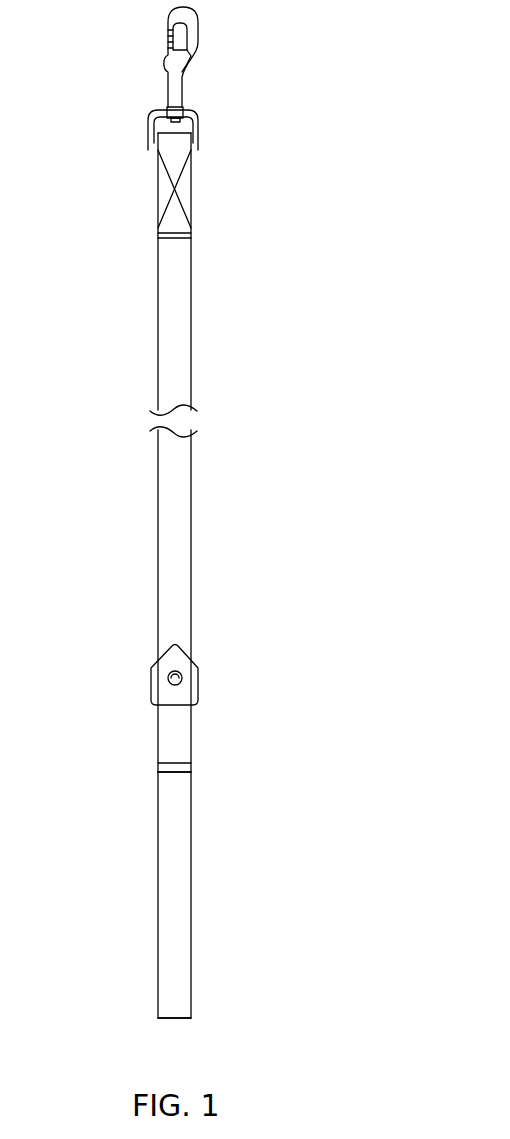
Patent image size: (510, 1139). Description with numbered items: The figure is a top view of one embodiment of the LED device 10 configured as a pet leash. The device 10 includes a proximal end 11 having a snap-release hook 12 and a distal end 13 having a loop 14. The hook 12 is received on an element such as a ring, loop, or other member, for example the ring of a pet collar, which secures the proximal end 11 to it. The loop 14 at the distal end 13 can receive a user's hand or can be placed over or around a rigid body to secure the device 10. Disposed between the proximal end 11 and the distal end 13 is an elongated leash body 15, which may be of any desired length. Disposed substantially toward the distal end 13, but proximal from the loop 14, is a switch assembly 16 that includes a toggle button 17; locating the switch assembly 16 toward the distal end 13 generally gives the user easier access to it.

The LED device 10 is at (239, 512).
The proximal end 11 is at (157, 78).
The snap-release hook 12 is at (198, 28).
The distal end 13 is at (247, 785).
The loop 14 is at (225, 949).
The elongated leash body 15 is at (181, 513).
The switch assembly 16 is at (200, 675).
The toggle button 17 is at (167, 677).